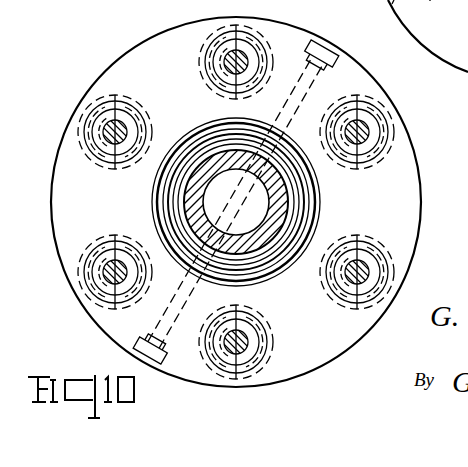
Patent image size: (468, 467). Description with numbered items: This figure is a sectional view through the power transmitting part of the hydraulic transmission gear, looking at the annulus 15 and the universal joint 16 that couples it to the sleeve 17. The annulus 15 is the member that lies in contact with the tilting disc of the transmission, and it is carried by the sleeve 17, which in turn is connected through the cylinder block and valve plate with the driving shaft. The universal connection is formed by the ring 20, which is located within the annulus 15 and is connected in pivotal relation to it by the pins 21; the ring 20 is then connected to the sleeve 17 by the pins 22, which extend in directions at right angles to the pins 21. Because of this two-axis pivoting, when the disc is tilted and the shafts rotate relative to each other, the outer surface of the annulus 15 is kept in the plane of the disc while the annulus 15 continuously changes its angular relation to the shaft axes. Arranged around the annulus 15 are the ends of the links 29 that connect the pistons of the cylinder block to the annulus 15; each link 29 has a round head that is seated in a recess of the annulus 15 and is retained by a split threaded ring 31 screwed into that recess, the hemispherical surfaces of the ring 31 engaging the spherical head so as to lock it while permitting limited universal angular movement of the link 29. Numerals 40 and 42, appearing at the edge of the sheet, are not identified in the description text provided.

The annulus 15 is at (419, 196).
The universal joint 16 is at (310, 197).
The sleeve 17 is at (268, 242).
The ring 20 is at (309, 220).
The pins 21 is at (339, 53).
The pins 22 is at (306, 229).
The links 29 is at (108, 140).
The split threaded rings 31 is at (138, 121).
The adjacent figure element 40 is at (433, 7).
The adjacent figure element 42 is at (400, 9).